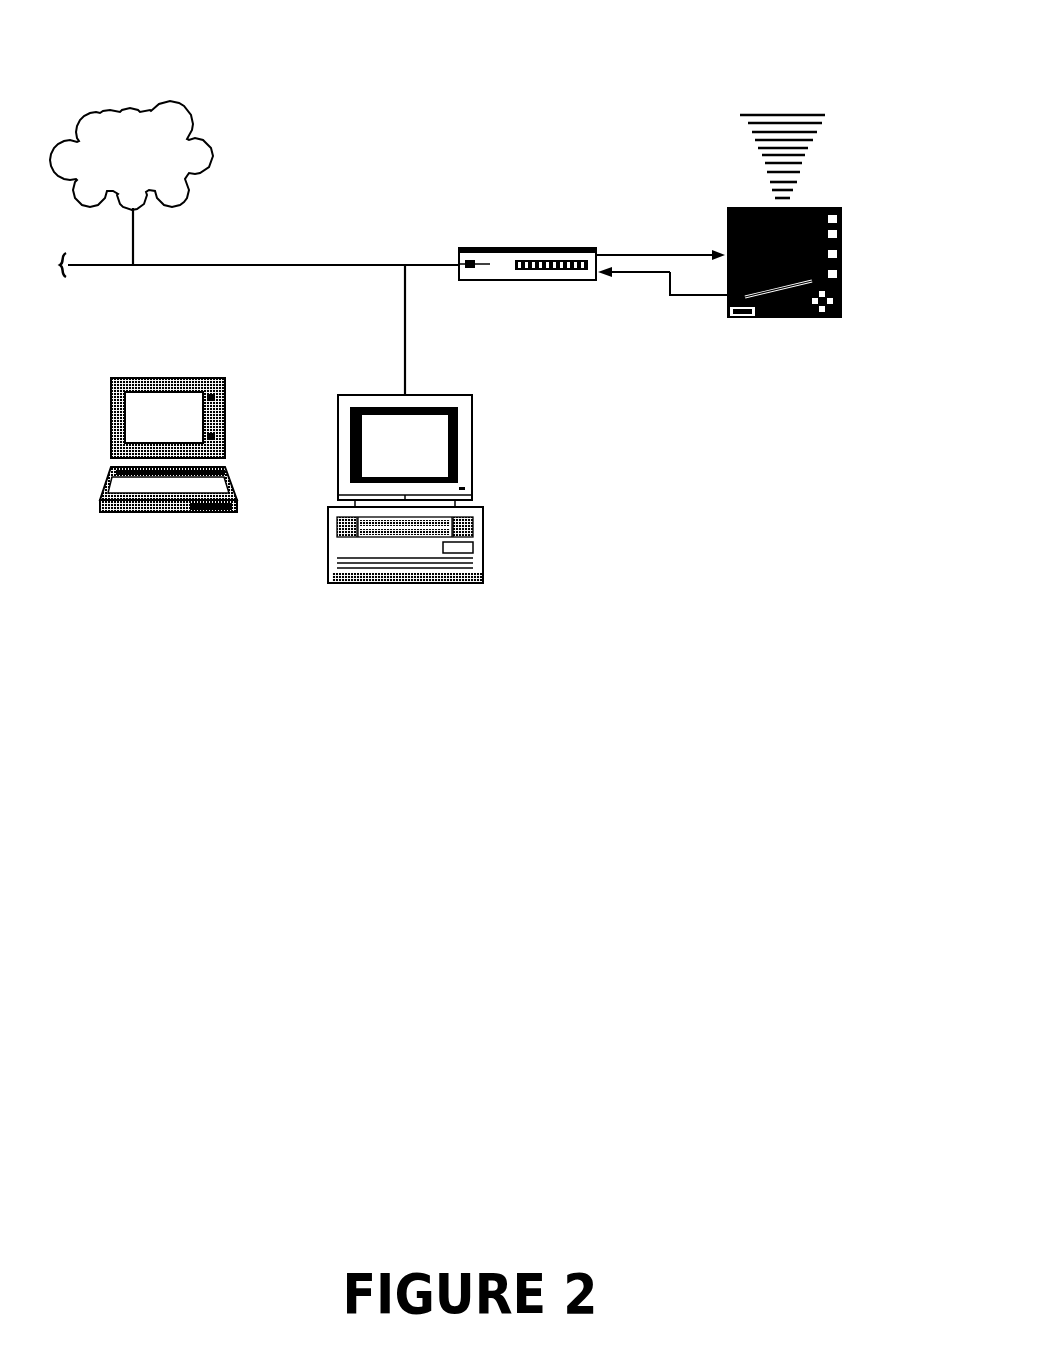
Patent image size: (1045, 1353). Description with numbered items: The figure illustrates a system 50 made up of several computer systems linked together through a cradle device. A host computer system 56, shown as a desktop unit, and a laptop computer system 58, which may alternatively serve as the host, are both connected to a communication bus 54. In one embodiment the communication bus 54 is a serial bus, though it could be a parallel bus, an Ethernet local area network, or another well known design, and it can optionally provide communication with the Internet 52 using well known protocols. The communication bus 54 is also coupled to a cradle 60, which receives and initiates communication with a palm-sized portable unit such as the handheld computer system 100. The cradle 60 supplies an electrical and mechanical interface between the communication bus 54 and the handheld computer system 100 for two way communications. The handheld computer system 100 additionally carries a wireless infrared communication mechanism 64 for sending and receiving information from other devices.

The system 50 is at (52, 22).
The Internet 52 is at (145, 190).
The communication bus 54 is at (301, 265).
The host computer system 56 is at (405, 515).
The laptop computer system 58 is at (168, 473).
The cradle 60 is at (593, 290).
The wireless infrared communication mechanism 64 is at (741, 149).
The handheld computer system 100 is at (783, 289).